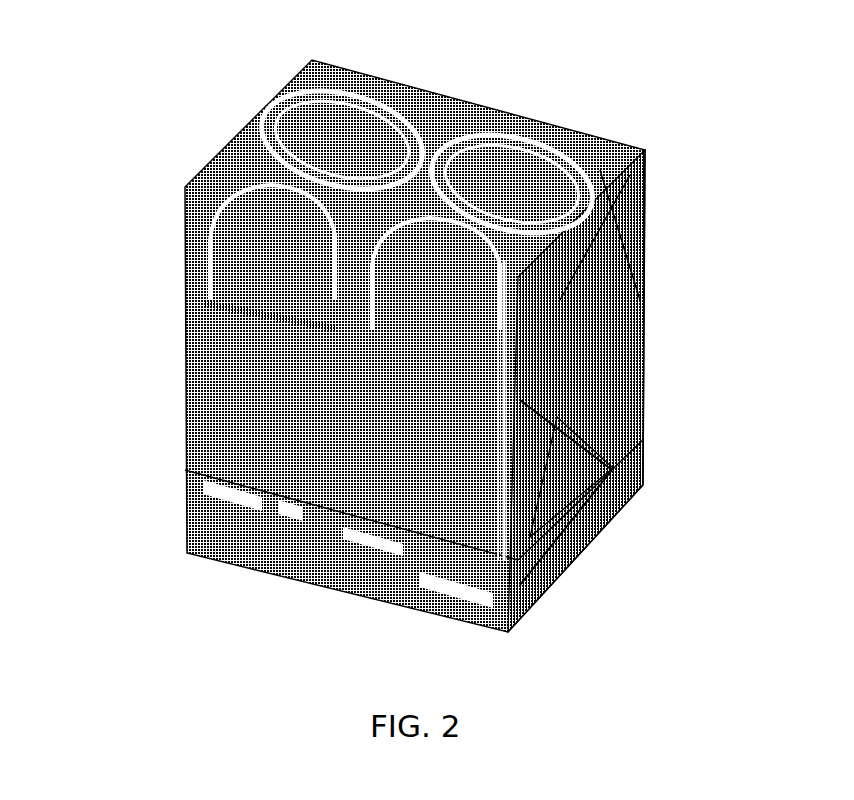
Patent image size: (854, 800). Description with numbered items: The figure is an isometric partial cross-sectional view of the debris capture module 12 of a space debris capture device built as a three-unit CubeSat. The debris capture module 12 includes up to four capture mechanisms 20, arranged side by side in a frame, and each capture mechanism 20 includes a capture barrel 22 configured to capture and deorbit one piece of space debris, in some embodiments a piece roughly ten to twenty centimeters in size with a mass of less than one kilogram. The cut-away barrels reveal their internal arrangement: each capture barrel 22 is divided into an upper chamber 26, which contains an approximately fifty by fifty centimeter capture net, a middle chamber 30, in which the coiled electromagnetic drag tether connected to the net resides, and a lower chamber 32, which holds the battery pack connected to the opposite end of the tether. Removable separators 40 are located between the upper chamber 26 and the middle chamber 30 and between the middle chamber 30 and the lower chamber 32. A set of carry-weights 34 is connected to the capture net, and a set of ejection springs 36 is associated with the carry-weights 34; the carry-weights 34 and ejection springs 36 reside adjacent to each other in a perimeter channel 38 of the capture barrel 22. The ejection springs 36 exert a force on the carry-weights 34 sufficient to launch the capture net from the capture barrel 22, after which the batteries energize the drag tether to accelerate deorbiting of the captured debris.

The debris capture module 12 is at (128, 86).
The capture mechanism 20 is at (358, 210).
The capture barrel 22 is at (270, 224).
The upper chamber 26 is at (250, 270).
The middle chamber 30 is at (251, 357).
The lower chamber 32 is at (253, 445).
The set of carry-weights 34 is at (505, 327).
The set of ejection springs 36 is at (505, 393).
The perimeter channel 38 is at (356, 240).
The removable separators 40 is at (233, 313).